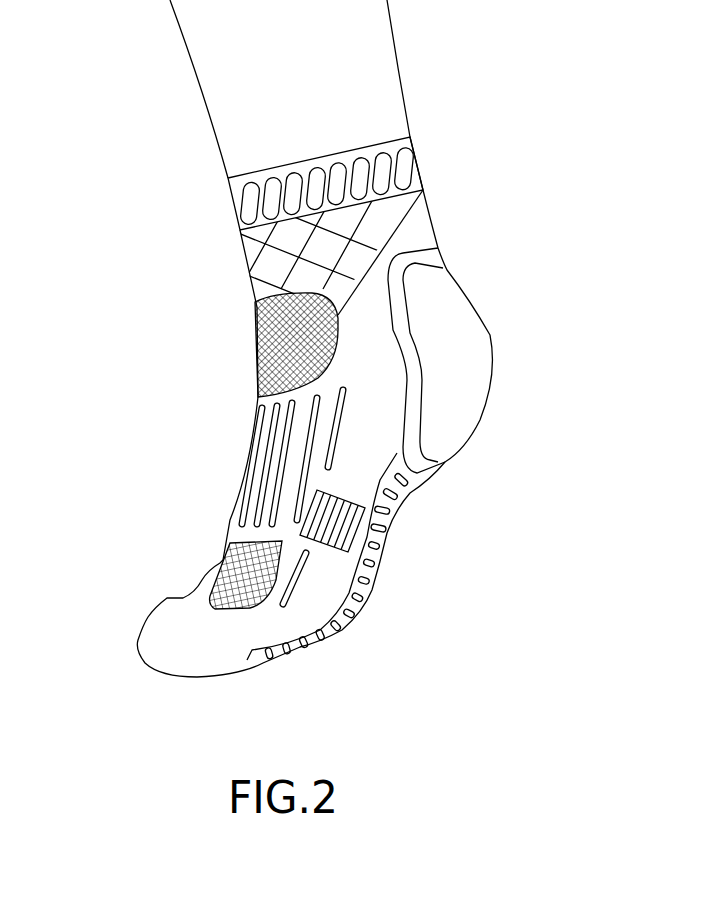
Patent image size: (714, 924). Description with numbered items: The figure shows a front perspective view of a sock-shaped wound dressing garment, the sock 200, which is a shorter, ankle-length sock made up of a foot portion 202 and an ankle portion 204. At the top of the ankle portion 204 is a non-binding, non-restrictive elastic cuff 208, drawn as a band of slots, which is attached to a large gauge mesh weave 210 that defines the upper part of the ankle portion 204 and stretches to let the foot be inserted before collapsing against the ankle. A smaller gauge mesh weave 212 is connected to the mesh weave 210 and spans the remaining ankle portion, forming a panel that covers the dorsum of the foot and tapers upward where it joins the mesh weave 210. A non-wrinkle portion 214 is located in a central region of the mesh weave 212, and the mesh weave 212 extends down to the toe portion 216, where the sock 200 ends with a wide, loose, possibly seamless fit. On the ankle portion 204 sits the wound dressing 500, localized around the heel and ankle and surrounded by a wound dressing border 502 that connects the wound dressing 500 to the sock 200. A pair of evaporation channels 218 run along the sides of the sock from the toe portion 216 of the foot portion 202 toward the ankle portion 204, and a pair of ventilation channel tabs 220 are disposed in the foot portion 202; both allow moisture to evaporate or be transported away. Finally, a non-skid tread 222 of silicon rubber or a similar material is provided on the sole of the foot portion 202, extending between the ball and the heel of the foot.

The sock 200 is at (116, 210).
The foot portion 202 is at (172, 424).
The ankle portion 204 is at (485, 191).
The elastic cuff 208 is at (425, 185).
The large gauge mesh weave 210 is at (248, 265).
The smaller gauge mesh weave 212 is at (258, 338).
The non-wrinkle portion 214 is at (247, 479).
The toe portion 216 is at (140, 640).
The evaporation channels 218 is at (335, 429).
The ventilation channel tabs 220 is at (352, 523).
The non-skid tread 222 is at (365, 598).
The wound dressing 500 is at (462, 345).
The wound dressing border 502 is at (438, 250).